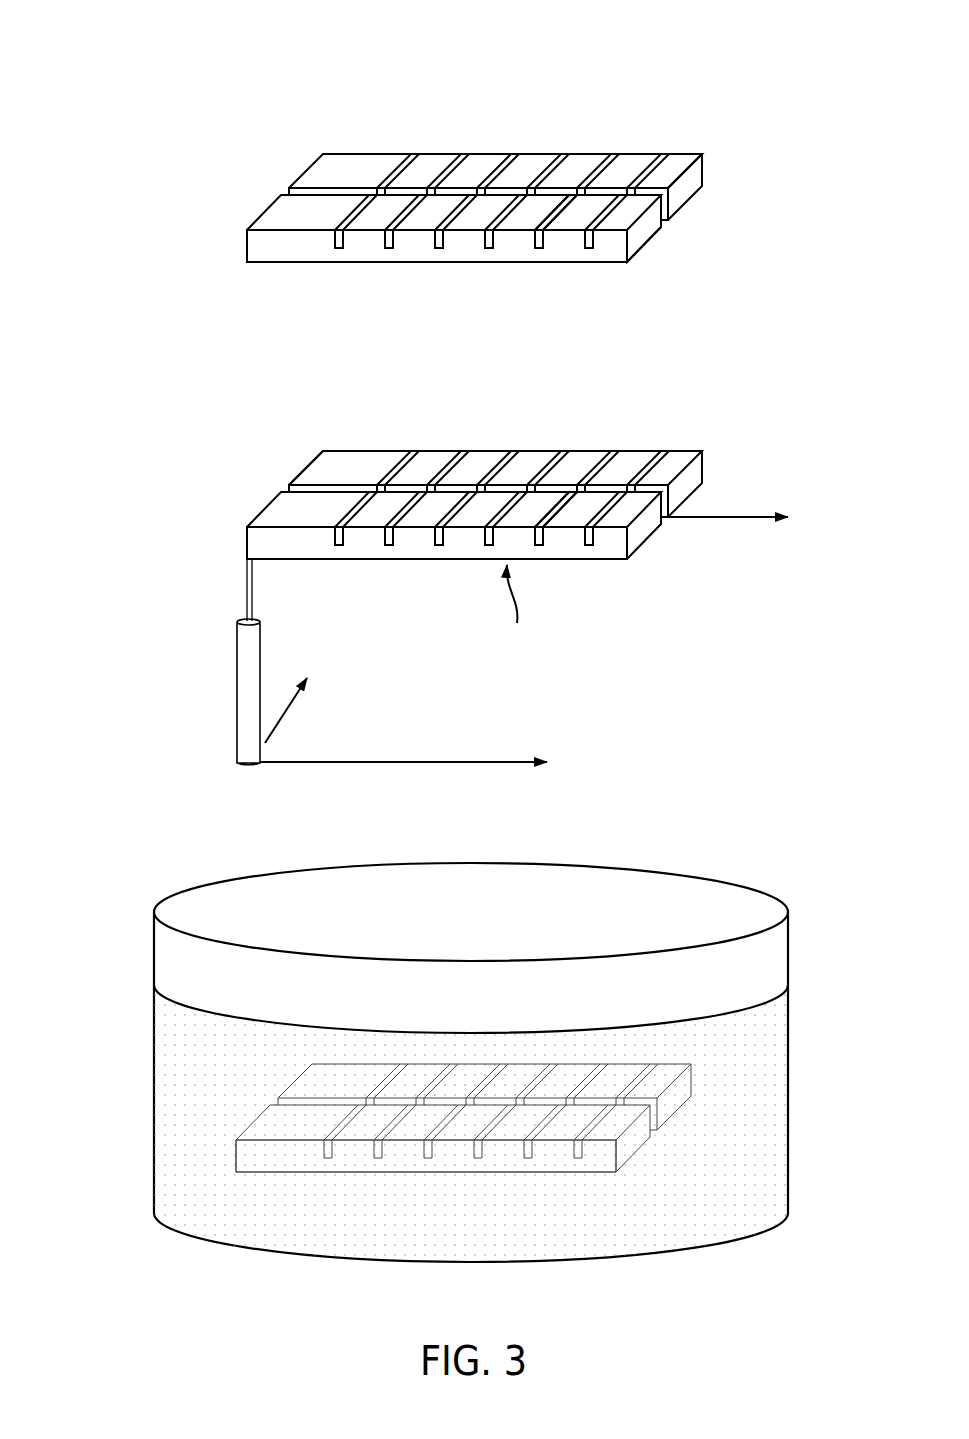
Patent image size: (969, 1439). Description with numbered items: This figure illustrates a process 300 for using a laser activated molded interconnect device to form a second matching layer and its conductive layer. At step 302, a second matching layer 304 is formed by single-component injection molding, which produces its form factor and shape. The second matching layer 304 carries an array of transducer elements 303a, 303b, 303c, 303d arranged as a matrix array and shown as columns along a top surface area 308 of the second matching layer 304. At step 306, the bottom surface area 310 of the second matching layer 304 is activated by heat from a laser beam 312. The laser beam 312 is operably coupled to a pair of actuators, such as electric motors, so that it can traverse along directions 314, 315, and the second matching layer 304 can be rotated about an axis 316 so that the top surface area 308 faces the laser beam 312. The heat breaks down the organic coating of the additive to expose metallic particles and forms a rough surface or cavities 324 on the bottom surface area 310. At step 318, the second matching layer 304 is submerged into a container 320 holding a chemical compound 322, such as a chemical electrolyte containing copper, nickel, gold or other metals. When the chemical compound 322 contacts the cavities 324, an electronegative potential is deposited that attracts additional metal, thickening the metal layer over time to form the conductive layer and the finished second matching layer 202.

The process 300 is at (748, 57).
The injection molding step 302 is at (227, 220).
The transducer element 303a is at (363, 152).
The transducer element 303b is at (435, 152).
The transducer element 303c is at (505, 232).
The transducer element 303d is at (687, 153).
The second matching layer 304 is at (648, 243).
The laser activation step 306 is at (205, 572).
The top surface area 308 is at (532, 125).
The bottom surface area 310 is at (516, 612).
The laser beam 312 is at (237, 708).
The direction 314 is at (284, 713).
The direction 315 is at (433, 760).
The axis 316 is at (743, 515).
The submerging step 318 is at (462, 1090).
The container 320 is at (788, 950).
The chemical compound 322 is at (173, 1160).
The cavities 324 is at (357, 1175).
The second matching layer 202 is at (592, 1158).